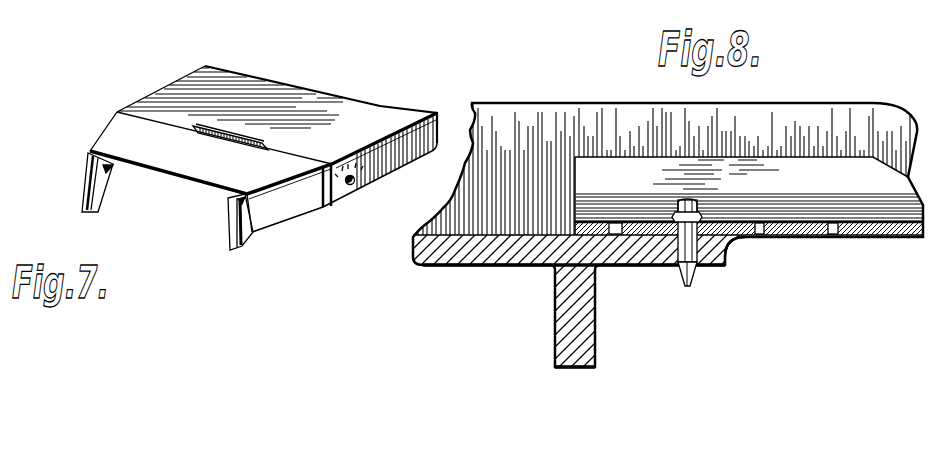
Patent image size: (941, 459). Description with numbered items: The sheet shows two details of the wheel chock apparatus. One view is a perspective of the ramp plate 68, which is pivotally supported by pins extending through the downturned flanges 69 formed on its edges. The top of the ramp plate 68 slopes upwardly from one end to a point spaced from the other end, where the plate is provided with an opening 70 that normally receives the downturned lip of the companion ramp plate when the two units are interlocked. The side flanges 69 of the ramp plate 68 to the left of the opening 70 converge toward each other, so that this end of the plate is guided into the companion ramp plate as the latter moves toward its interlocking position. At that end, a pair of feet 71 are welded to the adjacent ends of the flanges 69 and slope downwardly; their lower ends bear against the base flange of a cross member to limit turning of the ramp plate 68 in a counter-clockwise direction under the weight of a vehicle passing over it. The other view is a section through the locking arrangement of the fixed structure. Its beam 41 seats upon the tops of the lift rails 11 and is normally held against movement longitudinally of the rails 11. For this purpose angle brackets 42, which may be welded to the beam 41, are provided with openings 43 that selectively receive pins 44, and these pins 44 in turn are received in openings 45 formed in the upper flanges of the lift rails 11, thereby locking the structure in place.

In FIG. 8, the lift rails 11 is at (430, 268).
In FIG. 8, the beam 41 is at (535, 111).
In FIG. 8, the angle brackets 42 is at (798, 163).
In FIG. 8, the openings 43 is at (832, 224).
In FIG. 8, the pins 44 is at (686, 287).
In FIG. 8, the openings 45 is at (722, 262).
In FIG. 7, the ramp plate 68 is at (308, 90).
In FIG. 7, the downturned flanges 69 is at (377, 174).
In FIG. 7, the opening 70 is at (259, 142).
In FIG. 7, the feet 71 is at (83, 208).